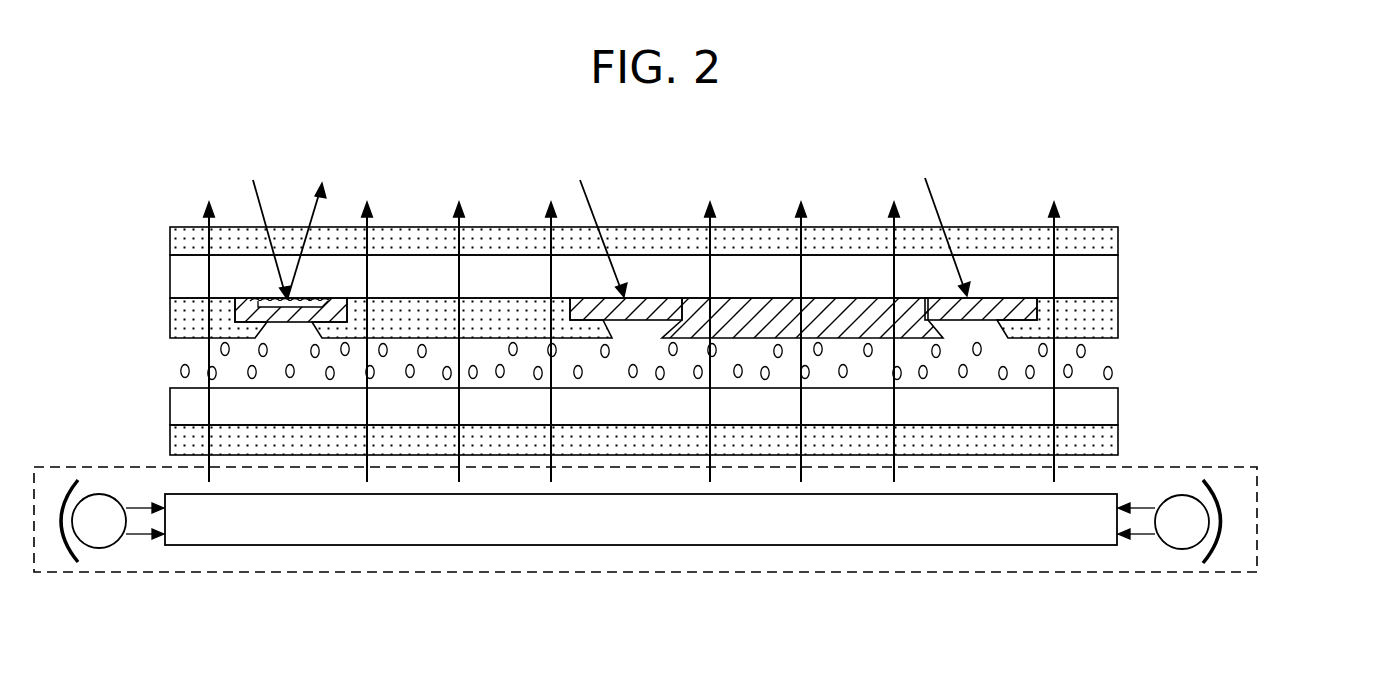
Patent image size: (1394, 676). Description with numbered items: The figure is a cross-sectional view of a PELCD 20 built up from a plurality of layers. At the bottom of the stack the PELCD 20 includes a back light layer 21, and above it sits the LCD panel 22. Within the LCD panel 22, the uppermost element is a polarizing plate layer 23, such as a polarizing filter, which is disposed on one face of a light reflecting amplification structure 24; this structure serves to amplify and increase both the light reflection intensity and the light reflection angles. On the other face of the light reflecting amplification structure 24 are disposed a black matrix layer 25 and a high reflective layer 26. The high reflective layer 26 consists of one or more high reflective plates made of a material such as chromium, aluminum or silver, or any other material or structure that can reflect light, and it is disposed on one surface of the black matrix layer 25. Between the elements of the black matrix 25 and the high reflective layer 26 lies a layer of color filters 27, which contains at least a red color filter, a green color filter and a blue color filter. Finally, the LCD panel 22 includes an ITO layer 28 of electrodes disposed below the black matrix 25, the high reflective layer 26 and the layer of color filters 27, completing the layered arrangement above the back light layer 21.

The PELCD 20 is at (135, 146).
The back light layer 21 is at (1257, 520).
The LCD panel 22 is at (1255, 225).
The polarizing plate layer 23 is at (1120, 241).
The light reflecting amplification structure 24 is at (1120, 280).
The black matrix layer 25 is at (237, 317).
The high reflective layer 26 is at (236, 315).
The layer of color filters 27 is at (823, 297).
The ITO layer 28 is at (1113, 383).